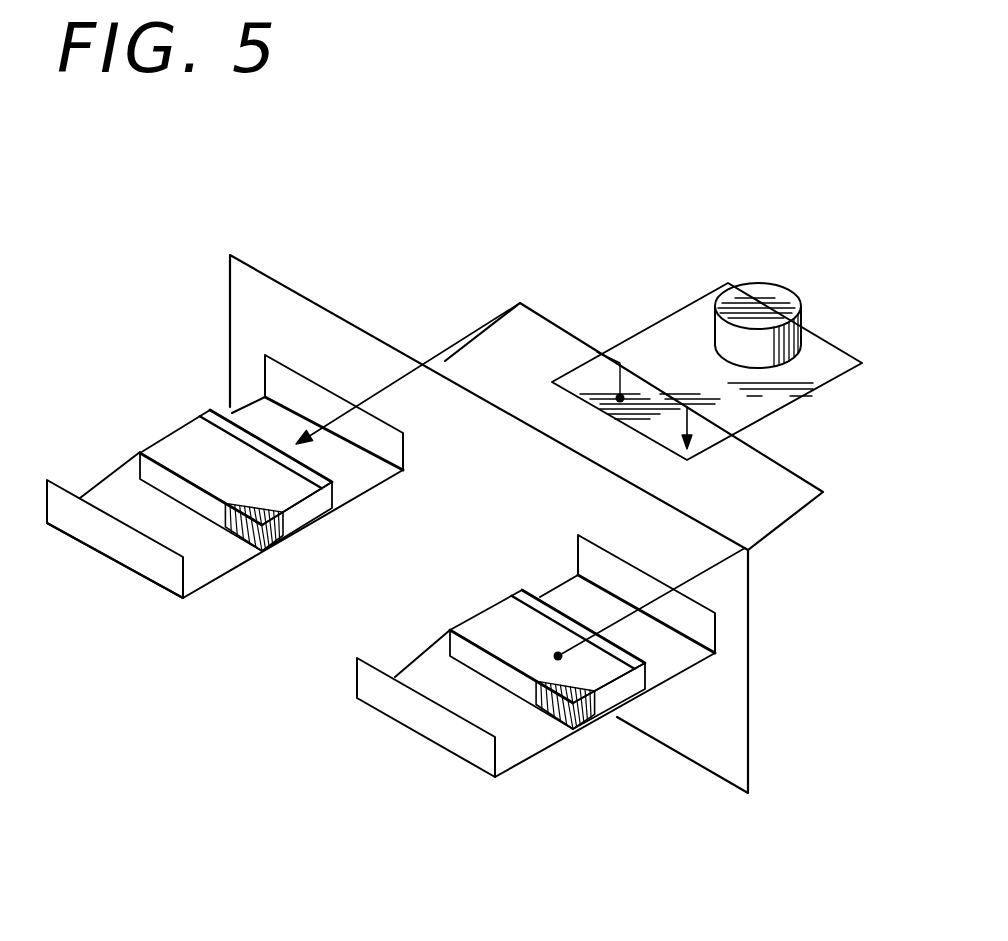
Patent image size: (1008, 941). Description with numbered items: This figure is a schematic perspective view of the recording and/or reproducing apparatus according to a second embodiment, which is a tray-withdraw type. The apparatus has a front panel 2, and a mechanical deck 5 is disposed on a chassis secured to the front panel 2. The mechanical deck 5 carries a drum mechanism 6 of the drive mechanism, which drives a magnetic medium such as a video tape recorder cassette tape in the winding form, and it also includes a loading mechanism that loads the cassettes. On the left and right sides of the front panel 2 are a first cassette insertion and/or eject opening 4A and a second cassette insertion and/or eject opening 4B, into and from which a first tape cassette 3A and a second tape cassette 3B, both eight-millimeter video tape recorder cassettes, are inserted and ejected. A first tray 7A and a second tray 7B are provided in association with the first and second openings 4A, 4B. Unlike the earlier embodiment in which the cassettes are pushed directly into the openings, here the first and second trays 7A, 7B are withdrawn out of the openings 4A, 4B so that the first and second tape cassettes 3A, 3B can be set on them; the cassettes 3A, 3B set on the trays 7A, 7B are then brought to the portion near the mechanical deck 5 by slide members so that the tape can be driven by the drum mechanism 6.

The front panel 2 is at (713, 707).
The first tape cassette 3A is at (182, 450).
The second tape cassette 3B is at (486, 627).
The first cassette insertion and/or eject opening 4A is at (288, 383).
The second cassette insertion and/or eject opening 4B is at (700, 627).
The mechanical deck 5 is at (830, 372).
The drum mechanism 6 is at (757, 297).
The first tray 7A is at (137, 560).
The second tray 7B is at (428, 723).